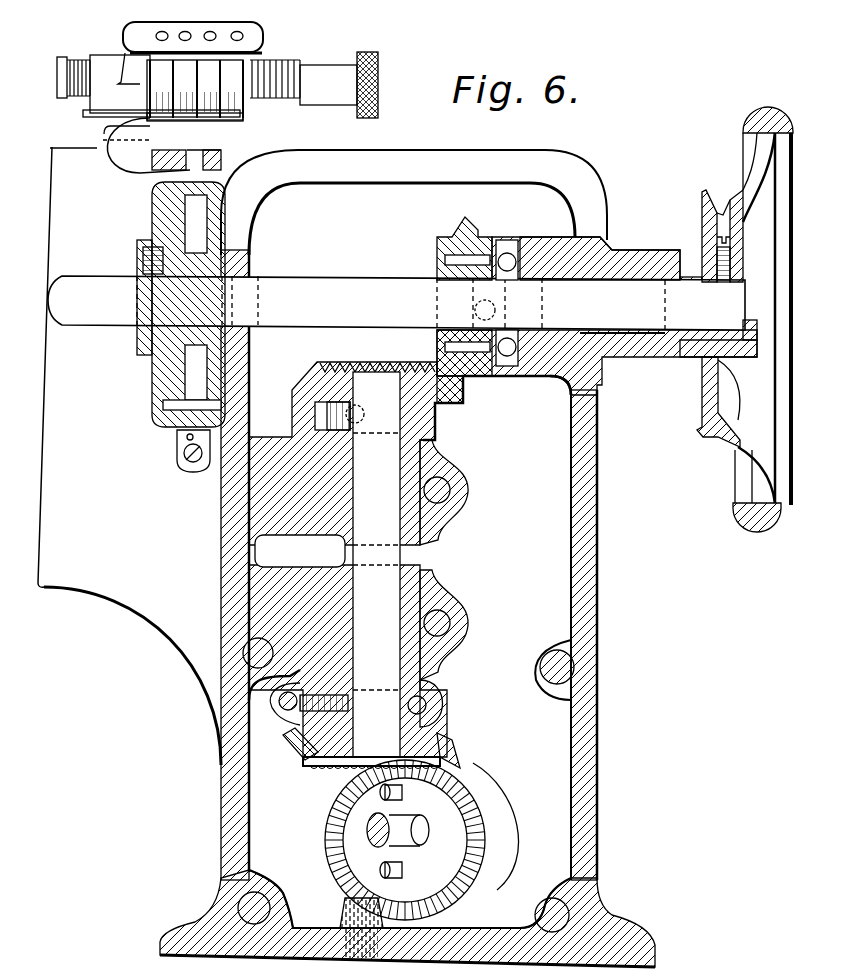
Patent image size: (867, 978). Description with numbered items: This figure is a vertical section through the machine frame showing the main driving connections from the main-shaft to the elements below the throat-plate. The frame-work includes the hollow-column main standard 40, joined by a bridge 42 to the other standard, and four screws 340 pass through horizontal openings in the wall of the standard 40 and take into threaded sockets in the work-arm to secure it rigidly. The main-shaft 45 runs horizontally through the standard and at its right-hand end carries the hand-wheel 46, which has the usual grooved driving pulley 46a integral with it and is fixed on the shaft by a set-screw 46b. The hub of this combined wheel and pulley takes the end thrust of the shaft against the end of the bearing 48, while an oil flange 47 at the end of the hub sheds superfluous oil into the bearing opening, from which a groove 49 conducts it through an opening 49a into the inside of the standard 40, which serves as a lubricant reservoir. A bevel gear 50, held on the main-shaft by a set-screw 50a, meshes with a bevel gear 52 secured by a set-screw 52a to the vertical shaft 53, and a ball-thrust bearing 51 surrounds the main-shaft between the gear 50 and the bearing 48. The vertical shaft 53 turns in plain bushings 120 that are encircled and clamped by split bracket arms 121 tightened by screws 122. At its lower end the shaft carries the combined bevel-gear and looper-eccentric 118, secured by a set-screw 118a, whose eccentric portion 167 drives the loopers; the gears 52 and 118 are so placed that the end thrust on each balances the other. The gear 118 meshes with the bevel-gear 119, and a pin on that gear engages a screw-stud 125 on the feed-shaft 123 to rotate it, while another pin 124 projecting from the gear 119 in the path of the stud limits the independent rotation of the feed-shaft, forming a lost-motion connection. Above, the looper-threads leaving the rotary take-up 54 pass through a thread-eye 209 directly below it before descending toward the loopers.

The main standard 40 is at (600, 532).
The bridge 42 is at (102, 578).
The main-shaft 45 is at (362, 295).
The hand-wheel 46 is at (748, 527).
The grooved driving pulley 46a is at (712, 200).
The set-screw 46b is at (716, 245).
The oil flange 47 is at (690, 360).
The bearing 48 is at (665, 372).
The groove 49 is at (636, 368).
The opening 49a is at (560, 382).
The bevel gear 50 is at (450, 242).
The set-screw 50a is at (498, 310).
The ball-thrust bearing 51 is at (505, 378).
The bevel gear 52 is at (356, 441).
The set-screw 52a is at (314, 413).
The vertical shaft 53 is at (380, 465).
The rotary take-up 54 is at (143, 352).
The combined bevel-gear and looper-eccentric 118 is at (300, 758).
The set-screw 118a is at (348, 705).
The bevel-gear 119 is at (472, 768).
The bushings 120 is at (408, 543).
The bracket arms 121 is at (436, 476).
The screws 122 is at (450, 492).
The feed-shaft 123 is at (366, 828).
The pin 124 is at (378, 868).
The screw-stud 125 is at (414, 822).
The eccentric portion 167 is at (318, 698).
The thread-eye 209 is at (180, 465).
The screws 340 is at (228, 682).